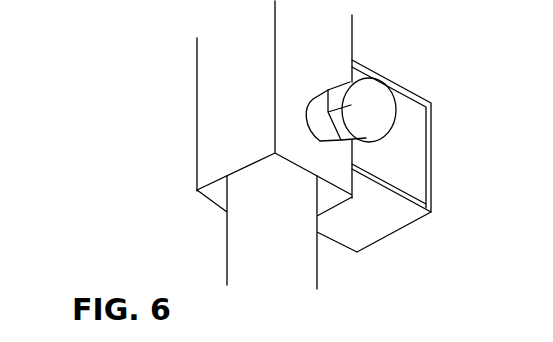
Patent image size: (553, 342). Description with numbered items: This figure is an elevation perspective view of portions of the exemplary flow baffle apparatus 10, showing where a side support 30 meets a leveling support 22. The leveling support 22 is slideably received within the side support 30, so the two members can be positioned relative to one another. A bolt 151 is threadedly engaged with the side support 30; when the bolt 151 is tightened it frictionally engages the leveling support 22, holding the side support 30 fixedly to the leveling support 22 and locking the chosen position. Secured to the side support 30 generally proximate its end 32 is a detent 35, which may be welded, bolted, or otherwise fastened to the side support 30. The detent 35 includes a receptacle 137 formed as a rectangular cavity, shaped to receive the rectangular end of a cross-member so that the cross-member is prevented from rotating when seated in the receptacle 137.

The flow baffle apparatus 10 is at (430, 235).
The leveling support 22 is at (303, 265).
The side support 30 is at (212, 98).
The end 32 is at (194, 182).
The detent 35 is at (430, 108).
The receptacle 137 is at (395, 140).
The bolt 151 is at (336, 90).